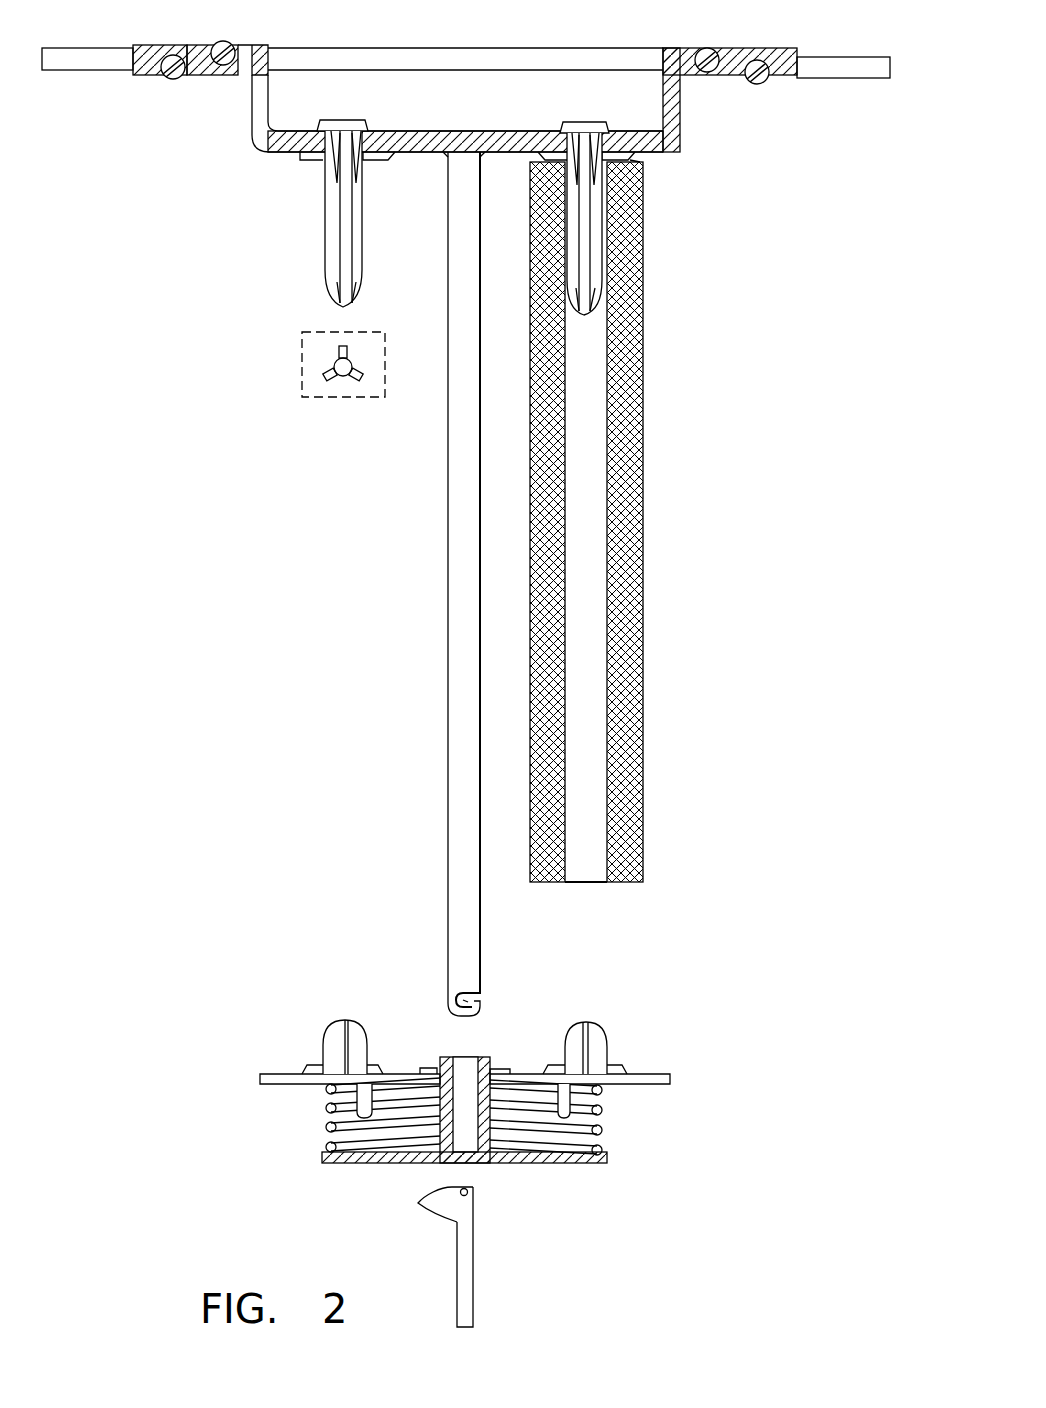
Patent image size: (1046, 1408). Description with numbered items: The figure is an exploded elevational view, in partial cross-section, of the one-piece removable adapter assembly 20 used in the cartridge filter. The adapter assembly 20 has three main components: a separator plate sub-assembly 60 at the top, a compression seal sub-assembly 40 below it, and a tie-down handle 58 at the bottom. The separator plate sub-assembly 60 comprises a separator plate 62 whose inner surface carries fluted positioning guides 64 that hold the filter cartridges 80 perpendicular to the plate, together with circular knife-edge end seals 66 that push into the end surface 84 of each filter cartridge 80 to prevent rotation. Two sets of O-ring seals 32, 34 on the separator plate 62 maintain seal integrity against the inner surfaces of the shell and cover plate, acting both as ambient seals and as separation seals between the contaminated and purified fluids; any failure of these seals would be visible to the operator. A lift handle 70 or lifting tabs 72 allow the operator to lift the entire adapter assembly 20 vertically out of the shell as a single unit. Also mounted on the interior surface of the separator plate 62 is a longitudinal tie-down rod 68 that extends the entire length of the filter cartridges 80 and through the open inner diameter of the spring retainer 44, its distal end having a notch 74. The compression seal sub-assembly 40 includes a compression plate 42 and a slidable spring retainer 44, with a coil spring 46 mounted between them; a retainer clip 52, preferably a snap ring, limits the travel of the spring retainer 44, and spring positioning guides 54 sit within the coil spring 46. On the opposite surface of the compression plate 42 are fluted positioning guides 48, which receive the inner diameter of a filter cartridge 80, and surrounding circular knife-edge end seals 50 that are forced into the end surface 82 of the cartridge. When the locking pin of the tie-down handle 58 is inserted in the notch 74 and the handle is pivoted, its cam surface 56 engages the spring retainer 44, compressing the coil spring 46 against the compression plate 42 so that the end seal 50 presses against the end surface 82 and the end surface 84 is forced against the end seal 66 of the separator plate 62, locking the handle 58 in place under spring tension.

The adapter assembly 20 is at (802, 288).
The O-ring seal 32 is at (222, 43).
The O-ring seal 34 is at (178, 80).
The compression seal sub-assembly 40 is at (690, 1118).
The compression plate 42 is at (283, 1073).
The spring retainer 44 is at (468, 1130).
The coil spring 46 is at (590, 1127).
The positioning guide 48 is at (345, 1020).
The end seal 50 is at (378, 1066).
The retainer clip 52 is at (432, 1067).
The spring positioning guide 54 is at (357, 1100).
The cam surface 56 is at (432, 1195).
The tie-down handle 58 is at (475, 1270).
The separator plate sub-assembly 60 is at (592, 50).
The separator plate 62 is at (672, 130).
The positioning guide 64 is at (332, 247).
The end seal 66 is at (542, 155).
The tie-down rod 68 is at (460, 637).
The lift handle 70 is at (332, 50).
The lifting tab 72 is at (100, 62).
The notch 74 is at (490, 997).
The filter cartridge 80 is at (643, 553).
The end surface 82 is at (628, 884).
The end surface 84 is at (648, 162).